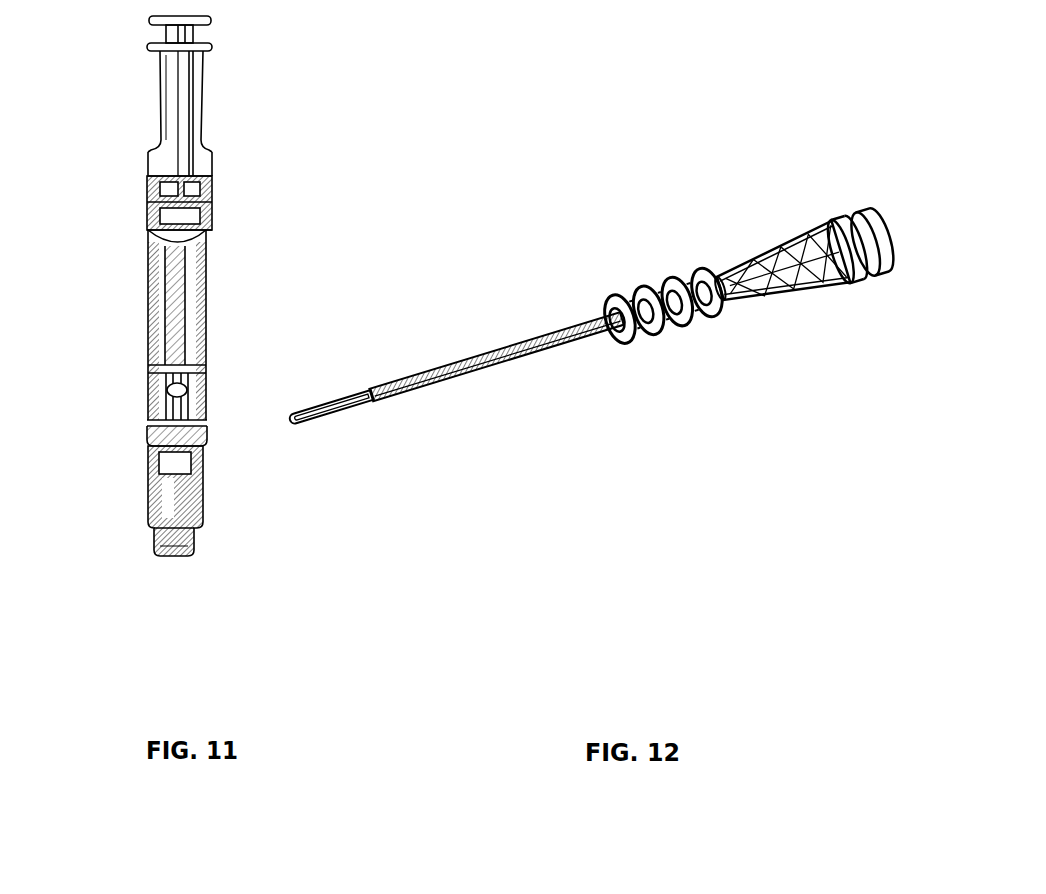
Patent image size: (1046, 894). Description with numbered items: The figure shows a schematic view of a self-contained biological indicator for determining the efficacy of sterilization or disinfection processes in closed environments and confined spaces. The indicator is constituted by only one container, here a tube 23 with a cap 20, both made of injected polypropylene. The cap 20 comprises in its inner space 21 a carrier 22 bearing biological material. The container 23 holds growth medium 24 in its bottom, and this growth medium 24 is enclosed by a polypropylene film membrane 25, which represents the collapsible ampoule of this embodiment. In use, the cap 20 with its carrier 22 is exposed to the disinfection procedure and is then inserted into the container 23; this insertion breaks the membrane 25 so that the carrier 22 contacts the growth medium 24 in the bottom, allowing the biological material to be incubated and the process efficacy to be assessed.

In FIG. 11, the cap 20 is at (242, 95).
In FIG. 12, the cap 20 is at (786, 212).
In FIG. 12, the inner space 21 is at (546, 351).
In FIG. 12, the carrier 22 is at (355, 435).
In FIG. 11, the container 23 is at (241, 298).
In FIG. 11, the growth medium 24 is at (115, 524).
In FIG. 11, the membrane 25 is at (147, 422).